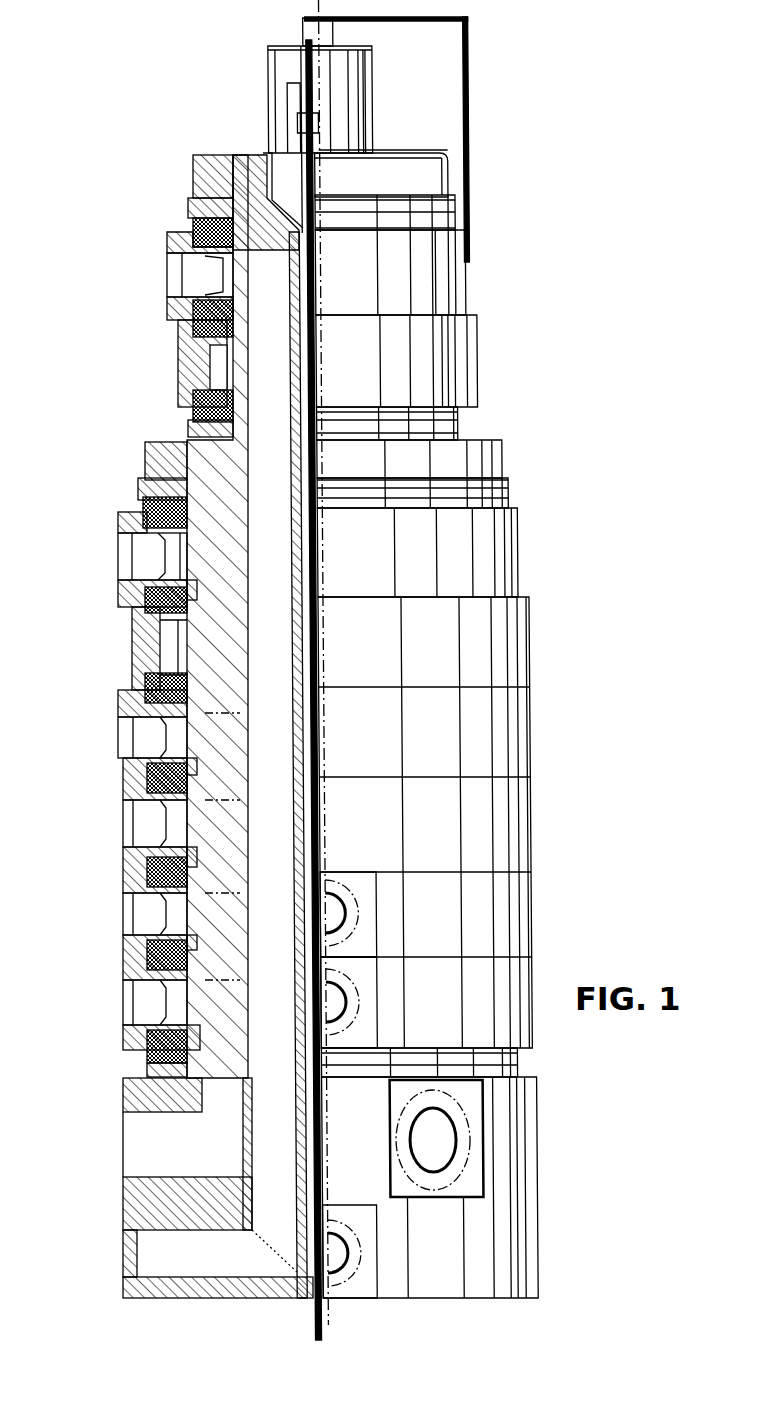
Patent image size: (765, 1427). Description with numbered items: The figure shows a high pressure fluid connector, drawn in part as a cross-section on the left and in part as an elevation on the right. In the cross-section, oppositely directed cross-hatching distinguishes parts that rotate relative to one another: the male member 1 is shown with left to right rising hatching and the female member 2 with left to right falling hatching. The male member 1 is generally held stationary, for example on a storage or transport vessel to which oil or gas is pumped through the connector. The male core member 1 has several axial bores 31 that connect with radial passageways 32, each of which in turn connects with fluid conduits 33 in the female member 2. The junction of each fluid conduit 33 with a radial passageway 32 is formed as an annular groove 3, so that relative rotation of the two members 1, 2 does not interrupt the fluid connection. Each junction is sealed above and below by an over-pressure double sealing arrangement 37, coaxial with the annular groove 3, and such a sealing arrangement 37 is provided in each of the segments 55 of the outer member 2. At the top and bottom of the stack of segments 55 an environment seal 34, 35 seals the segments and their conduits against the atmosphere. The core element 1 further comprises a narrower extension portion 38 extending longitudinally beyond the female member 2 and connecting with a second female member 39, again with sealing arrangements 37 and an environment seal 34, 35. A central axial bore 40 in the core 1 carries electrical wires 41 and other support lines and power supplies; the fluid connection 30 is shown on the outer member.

The male member 1 is at (200, 457).
The female member 2 is at (118, 521).
The annular groove 3 is at (197, 826).
The connection port 30 is at (452, 1146).
The axial bores 31 is at (230, 752).
The radial passageways 32 is at (195, 742).
The fluid conduits 33 is at (122, 565).
The environment seal 34 is at (188, 427).
The environment seal 35 is at (193, 222).
The sealing arrangement 37 is at (182, 346).
The extension portion 38 is at (252, 173).
The second female member 39 is at (168, 305).
The central axial bore 40 is at (330, 1298).
The electrical wires 41 is at (312, 1322).
The segments 55 is at (517, 740).